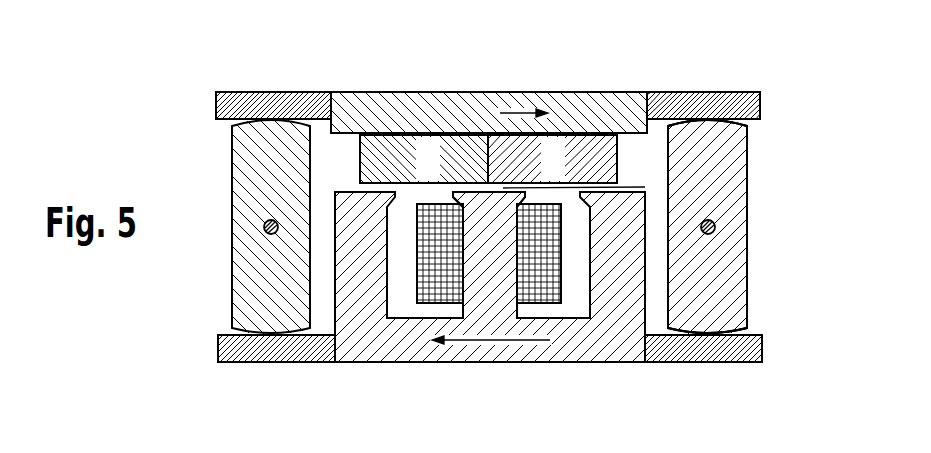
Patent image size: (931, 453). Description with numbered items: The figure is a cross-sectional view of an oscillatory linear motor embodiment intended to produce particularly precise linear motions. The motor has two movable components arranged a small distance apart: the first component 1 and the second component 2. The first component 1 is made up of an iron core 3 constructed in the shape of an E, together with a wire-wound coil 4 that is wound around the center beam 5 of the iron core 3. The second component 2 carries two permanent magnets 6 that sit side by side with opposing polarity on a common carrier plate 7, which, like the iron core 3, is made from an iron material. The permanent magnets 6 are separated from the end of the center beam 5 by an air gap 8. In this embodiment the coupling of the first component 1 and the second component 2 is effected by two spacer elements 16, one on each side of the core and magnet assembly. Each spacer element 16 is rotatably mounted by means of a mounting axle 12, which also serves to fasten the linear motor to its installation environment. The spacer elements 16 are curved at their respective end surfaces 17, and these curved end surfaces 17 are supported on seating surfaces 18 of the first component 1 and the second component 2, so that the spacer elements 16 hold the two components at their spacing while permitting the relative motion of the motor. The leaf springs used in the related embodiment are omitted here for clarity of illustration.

The first component 1 is at (372, 373).
The second component 2 is at (370, 80).
The iron core 3 is at (402, 338).
The coil 4 is at (537, 273).
The center beam 5 is at (492, 265).
The permanent magnets 6 is at (393, 148).
The carrier plate 7 is at (608, 112).
The air gap 8 is at (645, 187).
The mounting axle 12 is at (716, 227).
The spacer element 16 is at (708, 263).
The end surface 17 is at (670, 120).
The seating surface 18 is at (740, 128).